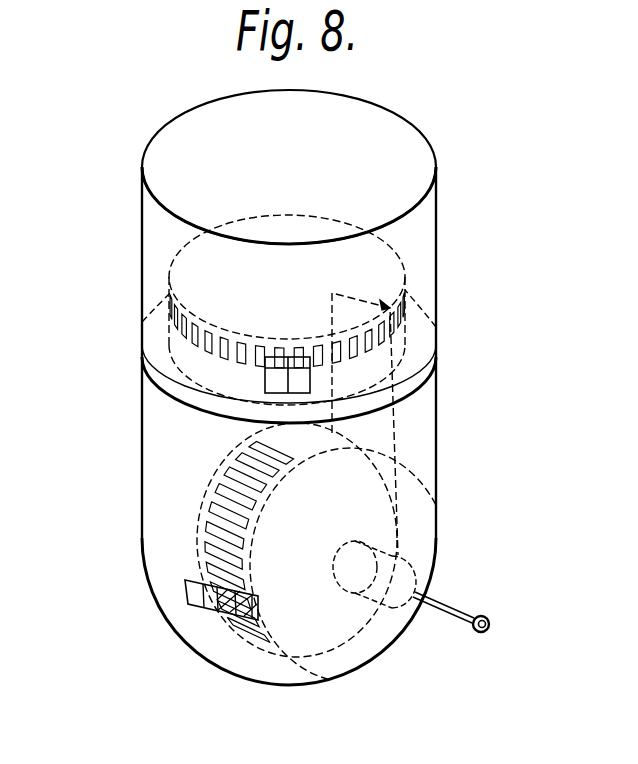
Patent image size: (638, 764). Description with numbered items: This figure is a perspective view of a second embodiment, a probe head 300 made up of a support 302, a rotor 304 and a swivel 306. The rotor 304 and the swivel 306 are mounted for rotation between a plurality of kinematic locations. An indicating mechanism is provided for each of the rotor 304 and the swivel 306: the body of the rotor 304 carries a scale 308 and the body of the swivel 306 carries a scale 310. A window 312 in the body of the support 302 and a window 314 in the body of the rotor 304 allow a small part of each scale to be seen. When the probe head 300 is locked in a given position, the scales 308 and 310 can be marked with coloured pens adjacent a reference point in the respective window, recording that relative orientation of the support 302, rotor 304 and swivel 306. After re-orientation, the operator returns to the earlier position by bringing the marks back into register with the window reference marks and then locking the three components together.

The probe head 300 is at (472, 370).
The support 302 is at (423, 282).
The rotor 304 is at (425, 495).
The swivel 306 is at (372, 492).
The scale 308 is at (172, 320).
The scale 310 is at (237, 627).
The window 312 is at (290, 357).
The window 314 is at (187, 587).